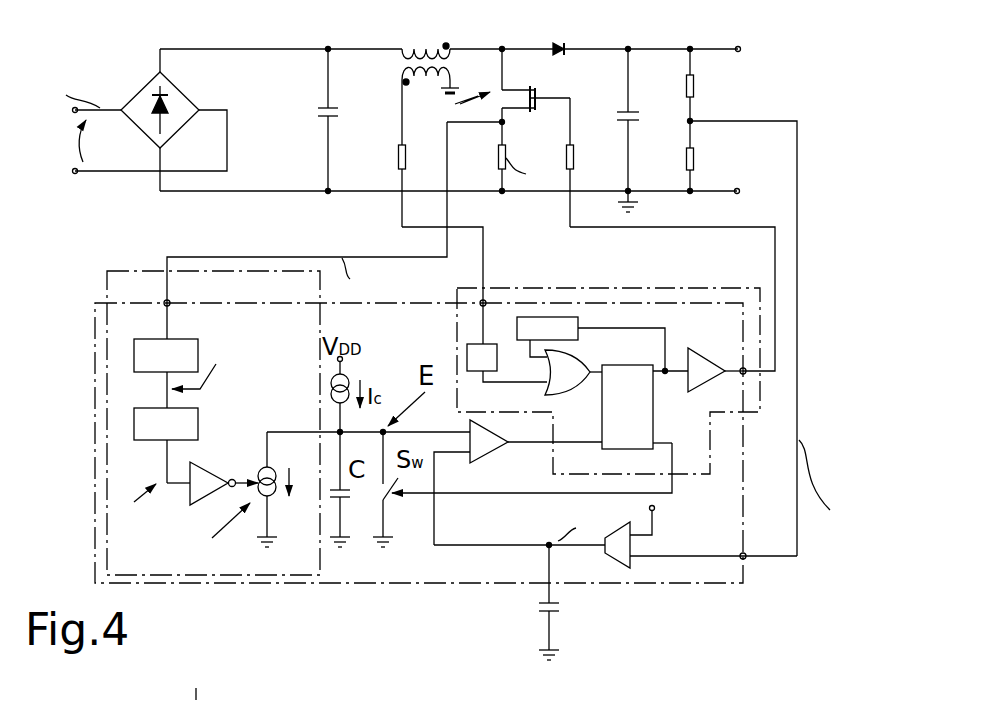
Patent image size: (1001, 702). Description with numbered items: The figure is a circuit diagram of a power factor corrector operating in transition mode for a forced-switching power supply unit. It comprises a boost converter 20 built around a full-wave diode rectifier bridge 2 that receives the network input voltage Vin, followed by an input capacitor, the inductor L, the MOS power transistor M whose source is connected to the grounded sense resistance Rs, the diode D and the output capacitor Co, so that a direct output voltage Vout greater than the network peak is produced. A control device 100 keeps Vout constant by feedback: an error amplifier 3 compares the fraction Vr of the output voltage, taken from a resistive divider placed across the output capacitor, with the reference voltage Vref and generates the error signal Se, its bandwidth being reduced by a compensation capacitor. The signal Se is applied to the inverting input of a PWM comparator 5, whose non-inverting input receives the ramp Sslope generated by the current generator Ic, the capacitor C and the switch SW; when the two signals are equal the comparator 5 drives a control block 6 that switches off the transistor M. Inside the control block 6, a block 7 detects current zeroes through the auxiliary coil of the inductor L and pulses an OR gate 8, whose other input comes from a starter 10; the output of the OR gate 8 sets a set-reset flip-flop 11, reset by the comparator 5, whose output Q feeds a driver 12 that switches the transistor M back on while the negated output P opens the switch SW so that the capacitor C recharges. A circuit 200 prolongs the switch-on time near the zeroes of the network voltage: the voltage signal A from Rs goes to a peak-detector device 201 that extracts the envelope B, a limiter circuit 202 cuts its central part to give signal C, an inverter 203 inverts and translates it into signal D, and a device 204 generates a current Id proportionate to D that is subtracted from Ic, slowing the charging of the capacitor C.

The full-wave diode rectifier bridge 2 is at (138, 100).
The boost converter 20 is at (487, 280).
The control device 100 is at (95, 392).
The circuit 200 is at (108, 271).
The peak-detector device 201 is at (166, 355).
The limiter circuit 202 is at (186, 415).
The inverter 203 is at (214, 470).
The device generating current Id 204 is at (272, 497).
The PWM comparator 5 is at (495, 450).
The control block 6 is at (766, 283).
The zero current detector block 7 is at (507, 363).
The OR gate 8 is at (582, 382).
The starter 10 is at (591, 343).
The set-reset flip-flop 11 is at (655, 398).
The driver 12 is at (700, 356).
The error amplifier 3 is at (642, 543).